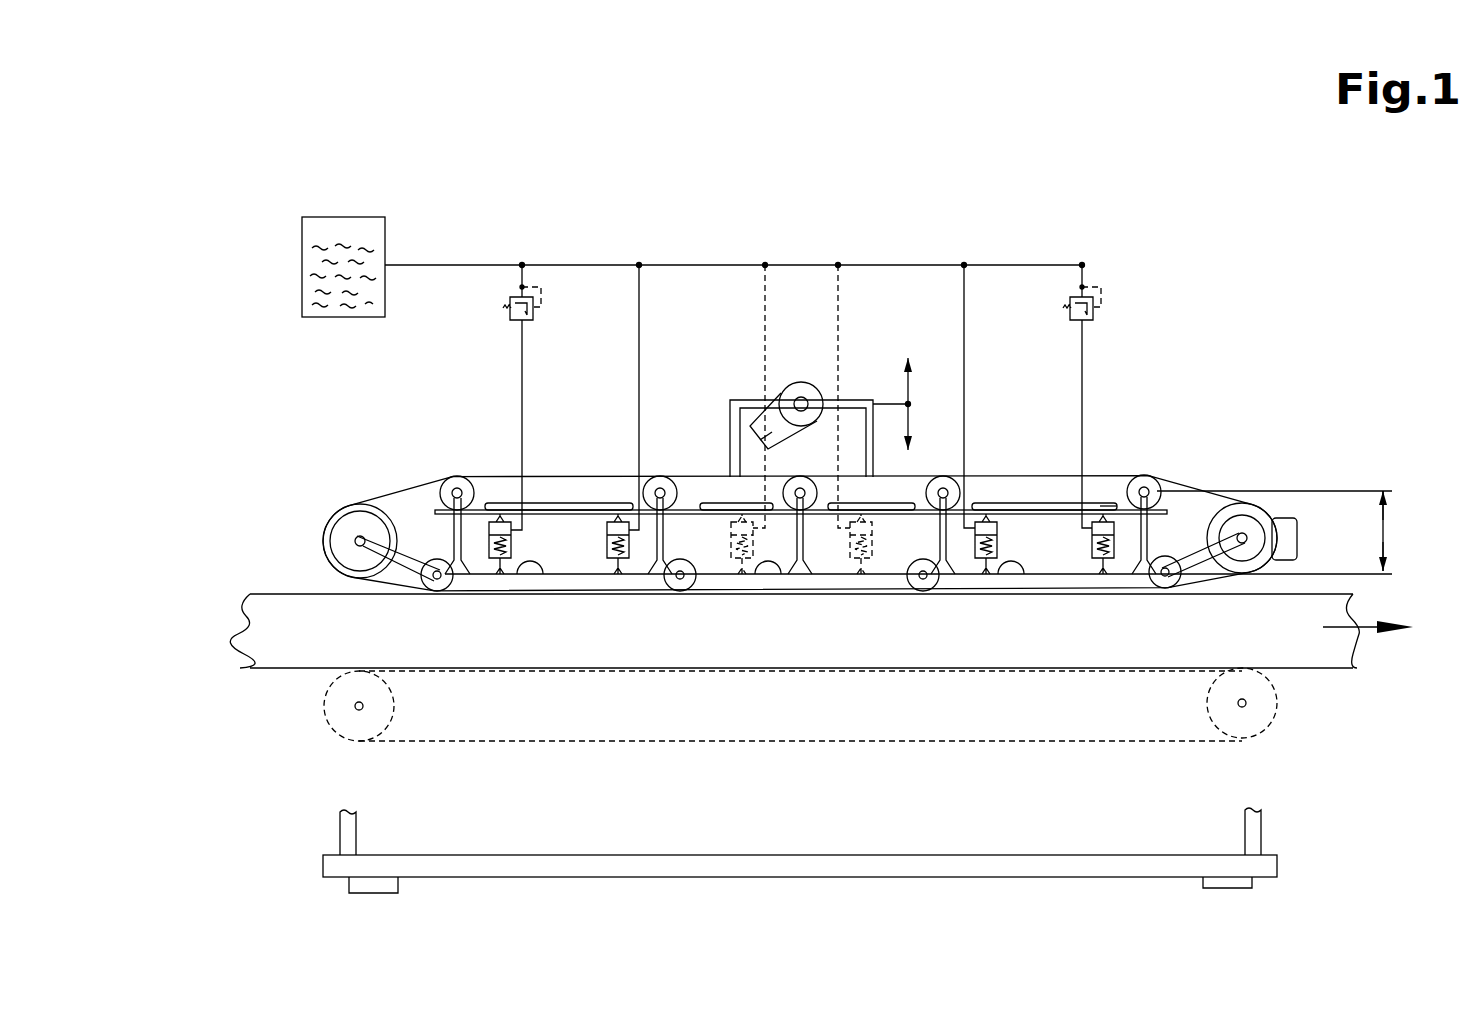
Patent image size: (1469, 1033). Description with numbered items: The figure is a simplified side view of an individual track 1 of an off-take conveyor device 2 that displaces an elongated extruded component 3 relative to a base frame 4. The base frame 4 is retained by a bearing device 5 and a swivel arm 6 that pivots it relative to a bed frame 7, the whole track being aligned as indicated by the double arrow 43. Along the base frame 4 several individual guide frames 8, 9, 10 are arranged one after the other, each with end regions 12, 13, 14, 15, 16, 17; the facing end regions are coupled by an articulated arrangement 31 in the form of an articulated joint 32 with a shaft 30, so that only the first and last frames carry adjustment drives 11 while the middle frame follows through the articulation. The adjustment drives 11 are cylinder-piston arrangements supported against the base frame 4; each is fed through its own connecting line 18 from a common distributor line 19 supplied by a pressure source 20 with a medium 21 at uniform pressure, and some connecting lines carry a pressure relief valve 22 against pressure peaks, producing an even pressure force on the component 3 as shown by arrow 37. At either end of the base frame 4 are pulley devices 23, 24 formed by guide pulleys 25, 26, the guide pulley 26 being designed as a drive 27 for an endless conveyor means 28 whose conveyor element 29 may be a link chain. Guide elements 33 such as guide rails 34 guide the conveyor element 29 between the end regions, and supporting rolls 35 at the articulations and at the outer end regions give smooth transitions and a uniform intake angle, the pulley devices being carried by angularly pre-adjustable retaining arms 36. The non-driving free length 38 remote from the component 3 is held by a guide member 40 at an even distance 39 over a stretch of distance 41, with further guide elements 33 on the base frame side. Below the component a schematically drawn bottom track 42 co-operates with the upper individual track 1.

The individual track 1 is at (1269, 422).
The off-take conveyor device 2 is at (1213, 398).
The component 3 is at (1318, 608).
The base frame 4 is at (1120, 506).
The bearing device 5 is at (805, 372).
The swivel arm 6 is at (757, 425).
The bed frame 7 is at (1285, 822).
The individual guide frame 8 is at (543, 595).
The individual guide frame 9 is at (782, 588).
The individual guide frame 10 is at (1023, 588).
The adjustment drive 11 is at (522, 548).
The end region 12 is at (457, 598).
The end region 13 is at (650, 597).
The end region 14 is at (705, 602).
The end region 15 is at (900, 597).
The end region 16 is at (938, 600).
The end region 17 is at (1130, 602).
The connecting line 18 is at (530, 371).
The distributor line 19 is at (733, 265).
The pressure source 20 is at (302, 167).
The medium 21 is at (307, 257).
The pressure relief valve 22 is at (488, 290).
The pulley device 23 is at (285, 490).
The pulley device 24 is at (1276, 488).
The guide pulley 25 is at (342, 537).
The guide pulley 26 is at (1265, 528).
The drive 27 is at (1287, 537).
The conveyor means 28 is at (395, 488).
The conveyor element 29 is at (430, 488).
The shaft 30 is at (680, 592).
The articulated arrangement 31 is at (670, 598).
The articulated joint 32 is at (714, 540).
The guide element 33 is at (607, 520).
The guide rail 34 is at (612, 508).
The supporting roll 35 is at (412, 588).
The retaining arm 36 is at (385, 507).
The arrow 37 is at (562, 535).
The non-driving free length 38 is at (979, 470).
The distance 39 is at (1385, 528).
The guide member 40 is at (467, 483).
The stretch of distance 41 is at (415, 488).
The track 42 is at (330, 752).
The double arrow 43 is at (902, 397).